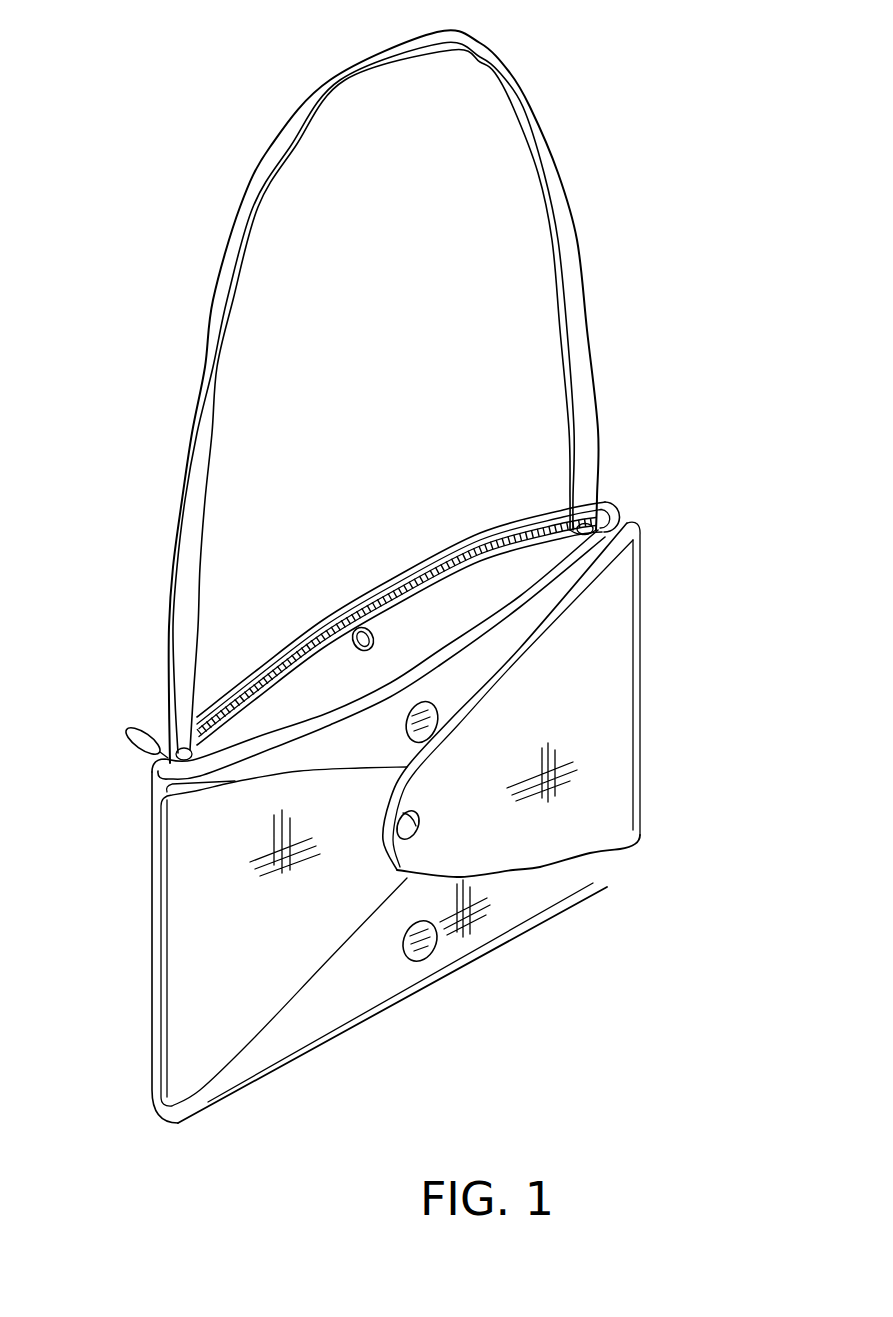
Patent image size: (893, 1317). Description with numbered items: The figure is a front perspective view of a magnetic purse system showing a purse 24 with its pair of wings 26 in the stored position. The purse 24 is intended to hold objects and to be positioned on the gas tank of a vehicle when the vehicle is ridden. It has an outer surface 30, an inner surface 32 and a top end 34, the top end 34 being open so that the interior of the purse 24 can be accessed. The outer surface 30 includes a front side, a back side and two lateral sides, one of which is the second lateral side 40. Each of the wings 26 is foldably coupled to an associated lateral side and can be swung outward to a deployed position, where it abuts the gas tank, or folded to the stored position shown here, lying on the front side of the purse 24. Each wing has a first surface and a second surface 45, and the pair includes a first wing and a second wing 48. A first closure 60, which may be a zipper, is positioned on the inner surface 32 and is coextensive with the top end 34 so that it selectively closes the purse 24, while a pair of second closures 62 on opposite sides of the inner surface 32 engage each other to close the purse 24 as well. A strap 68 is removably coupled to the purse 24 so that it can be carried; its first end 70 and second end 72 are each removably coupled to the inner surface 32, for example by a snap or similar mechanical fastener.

The purse 24 is at (612, 501).
The pair of wings 26 is at (620, 850).
The outer surface 30 is at (325, 1005).
The inner surface 32 is at (500, 590).
The top end 34 is at (318, 618).
The second lateral side 40 is at (590, 852).
The second surface 45 is at (603, 678).
The second wing 48 is at (243, 1051).
The first closure 60 is at (430, 559).
The second closures 62 is at (362, 628).
The strap 68 is at (347, 72).
The first end 70 is at (193, 797).
The second end 72 is at (587, 535).